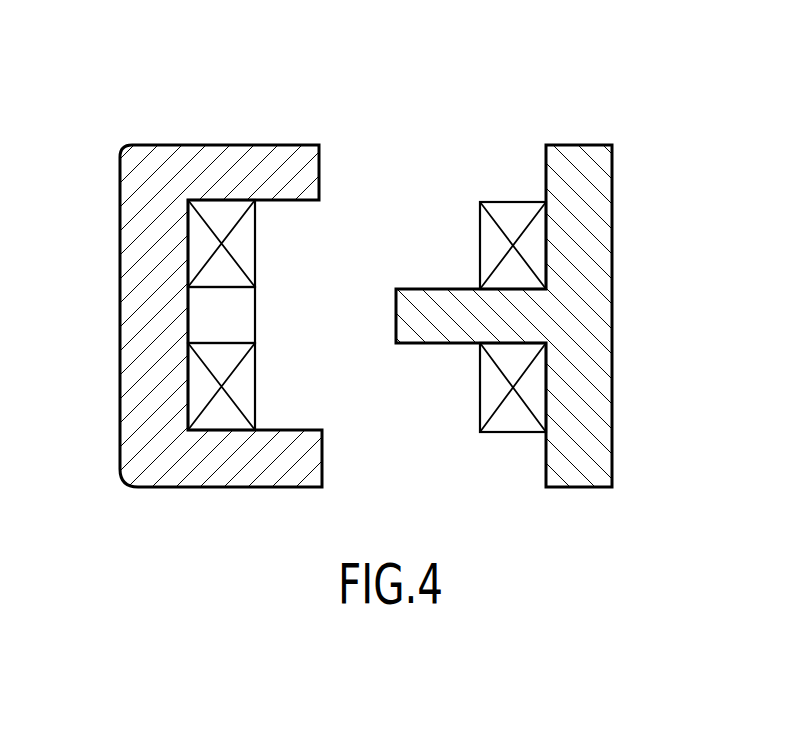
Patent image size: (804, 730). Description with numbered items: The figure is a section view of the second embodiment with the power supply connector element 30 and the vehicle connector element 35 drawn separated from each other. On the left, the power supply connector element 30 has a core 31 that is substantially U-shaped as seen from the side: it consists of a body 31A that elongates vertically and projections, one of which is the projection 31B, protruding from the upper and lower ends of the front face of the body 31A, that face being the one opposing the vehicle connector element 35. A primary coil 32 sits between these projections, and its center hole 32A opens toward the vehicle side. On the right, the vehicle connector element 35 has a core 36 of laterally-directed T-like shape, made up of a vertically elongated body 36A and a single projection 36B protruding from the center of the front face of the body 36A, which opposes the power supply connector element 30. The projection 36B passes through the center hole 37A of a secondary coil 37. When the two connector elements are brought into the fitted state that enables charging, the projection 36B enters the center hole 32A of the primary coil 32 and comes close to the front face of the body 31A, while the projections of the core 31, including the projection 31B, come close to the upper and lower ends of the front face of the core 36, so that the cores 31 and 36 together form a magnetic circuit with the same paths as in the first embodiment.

The power supply connector element 30 is at (188, 275).
The core 31 is at (188, 296).
The body 31A is at (135, 352).
The projection 31B is at (297, 146).
The primary coil 32 is at (260, 315).
The center hole 32A is at (213, 291).
The vehicle connector element 35 is at (550, 257).
The core 36 is at (550, 316).
The body 36A is at (573, 300).
The projection 36B is at (443, 297).
The secondary coil 37 is at (584, 262).
The center hole 37A is at (513, 342).